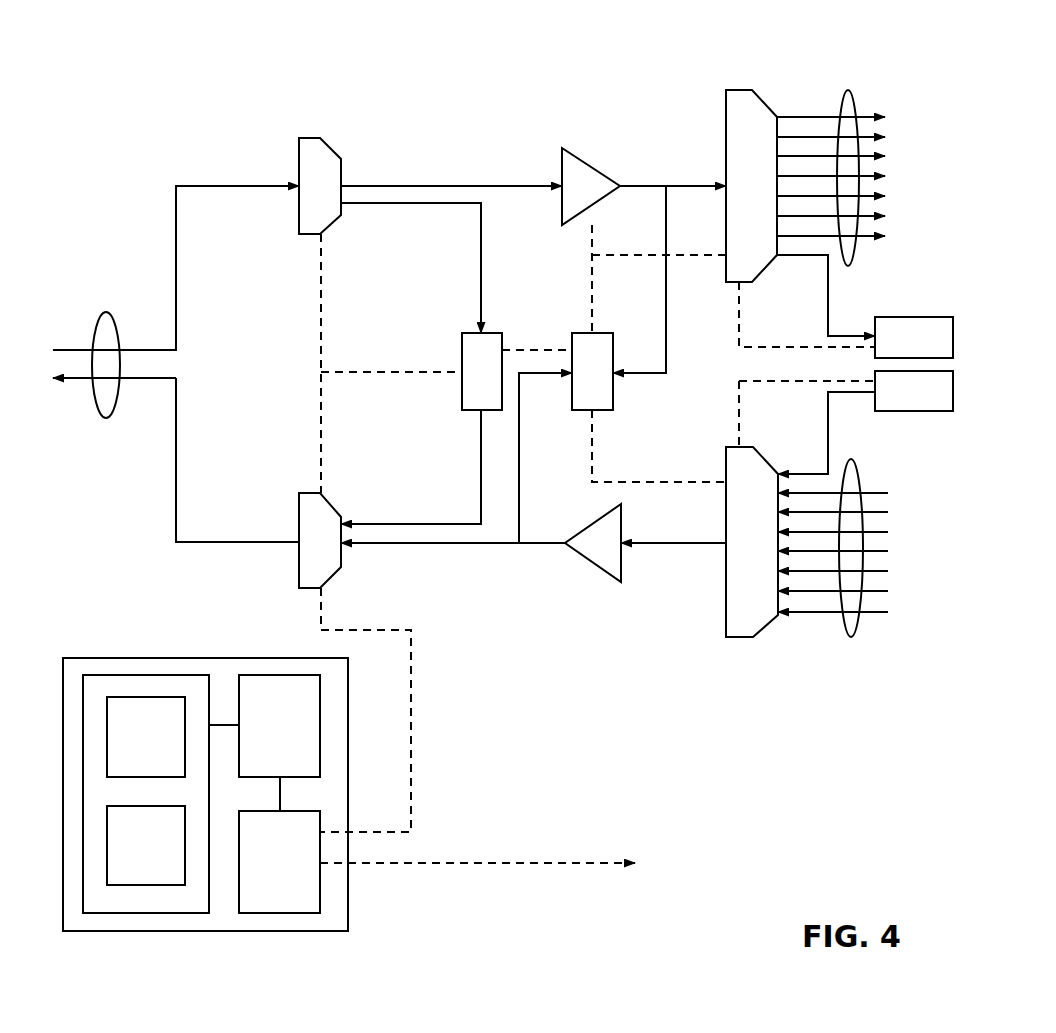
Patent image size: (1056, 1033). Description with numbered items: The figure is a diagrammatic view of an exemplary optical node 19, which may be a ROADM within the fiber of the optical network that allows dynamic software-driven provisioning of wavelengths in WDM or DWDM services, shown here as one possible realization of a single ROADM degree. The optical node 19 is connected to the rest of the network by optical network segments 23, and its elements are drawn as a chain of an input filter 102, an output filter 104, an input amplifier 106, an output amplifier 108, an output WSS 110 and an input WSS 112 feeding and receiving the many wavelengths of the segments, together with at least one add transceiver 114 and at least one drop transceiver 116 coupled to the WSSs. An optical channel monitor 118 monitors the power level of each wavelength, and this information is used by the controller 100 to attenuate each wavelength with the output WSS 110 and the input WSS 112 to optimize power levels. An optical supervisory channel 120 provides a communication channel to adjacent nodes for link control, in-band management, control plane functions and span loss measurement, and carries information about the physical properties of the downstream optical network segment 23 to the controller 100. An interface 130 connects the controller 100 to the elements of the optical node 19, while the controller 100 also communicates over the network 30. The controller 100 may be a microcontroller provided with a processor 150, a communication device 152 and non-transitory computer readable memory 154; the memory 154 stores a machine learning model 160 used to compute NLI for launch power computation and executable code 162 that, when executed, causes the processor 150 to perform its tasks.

The optical node 19 is at (130, 95).
The optical network segment 23 is at (106, 418).
The network 30 is at (532, 863).
The controller 100 is at (258, 764).
The input filter 102 is at (313, 137).
The output filter 104 is at (299, 573).
The input amplifier 106 is at (603, 163).
The output amplifier 108 is at (583, 567).
The output WSS 110 is at (737, 90).
The input WSS 112 is at (738, 637).
The add transceiver 114 is at (902, 317).
The drop transceiver 116 is at (902, 411).
The optical channel monitor 118 is at (613, 405).
The optical supervisory channel 120 is at (462, 393).
The interface 130 is at (420, 676).
The processor 150 is at (279, 726).
The communication device 152 is at (279, 862).
The non-transitory computer readable memory 154 is at (140, 675).
The machine learning model 160 is at (146, 737).
The executable code 162 is at (146, 845).